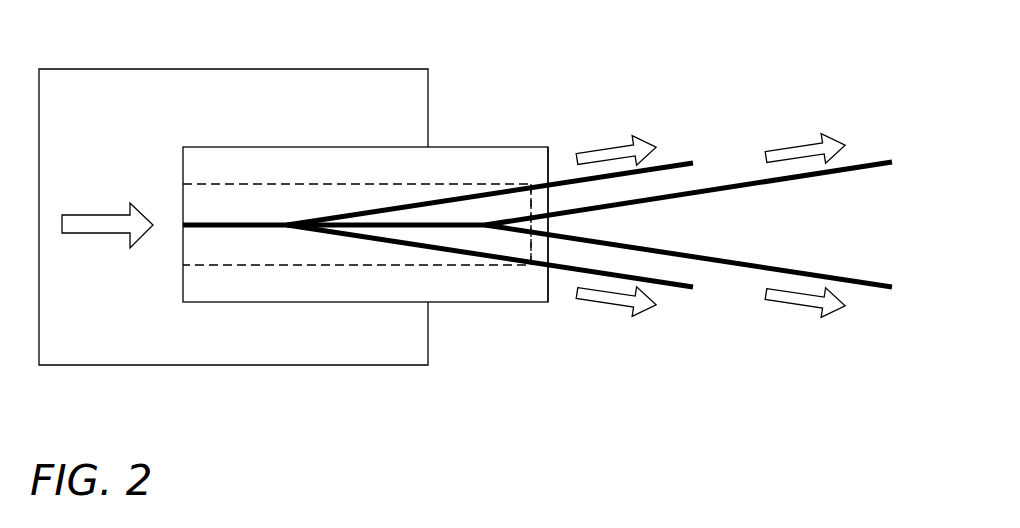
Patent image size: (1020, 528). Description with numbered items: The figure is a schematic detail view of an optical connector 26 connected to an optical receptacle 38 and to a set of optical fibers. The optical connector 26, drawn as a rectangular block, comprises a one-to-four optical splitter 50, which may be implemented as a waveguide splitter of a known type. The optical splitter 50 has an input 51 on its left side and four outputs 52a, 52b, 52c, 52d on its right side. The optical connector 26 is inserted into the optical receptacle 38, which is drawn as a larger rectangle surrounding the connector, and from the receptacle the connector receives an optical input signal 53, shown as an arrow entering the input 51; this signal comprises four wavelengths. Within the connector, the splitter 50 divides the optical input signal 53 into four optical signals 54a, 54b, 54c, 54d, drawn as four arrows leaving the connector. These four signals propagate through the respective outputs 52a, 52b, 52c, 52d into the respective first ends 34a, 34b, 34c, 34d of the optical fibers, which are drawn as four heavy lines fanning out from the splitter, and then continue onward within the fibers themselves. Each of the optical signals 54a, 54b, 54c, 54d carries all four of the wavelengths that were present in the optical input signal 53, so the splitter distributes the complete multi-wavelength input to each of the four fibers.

The optical receptacle 38 is at (96, 69).
The optical splitter 50 is at (249, 184).
The input 51 is at (183, 225).
The optical input signal 53 is at (93, 233).
The optical connector 26 is at (254, 302).
The output 52a is at (535, 183).
The output 52b is at (538, 215).
The output 52c is at (538, 237).
The output 52d is at (532, 265).
The first end 34a is at (686, 161).
The first end 34b is at (736, 187).
The first end 34c is at (728, 263).
The first end 34d is at (685, 290).
The optical signal 54a is at (614, 150).
The optical signal 54b is at (790, 148).
The optical signal 54c is at (792, 304).
The optical signal 54d is at (612, 305).